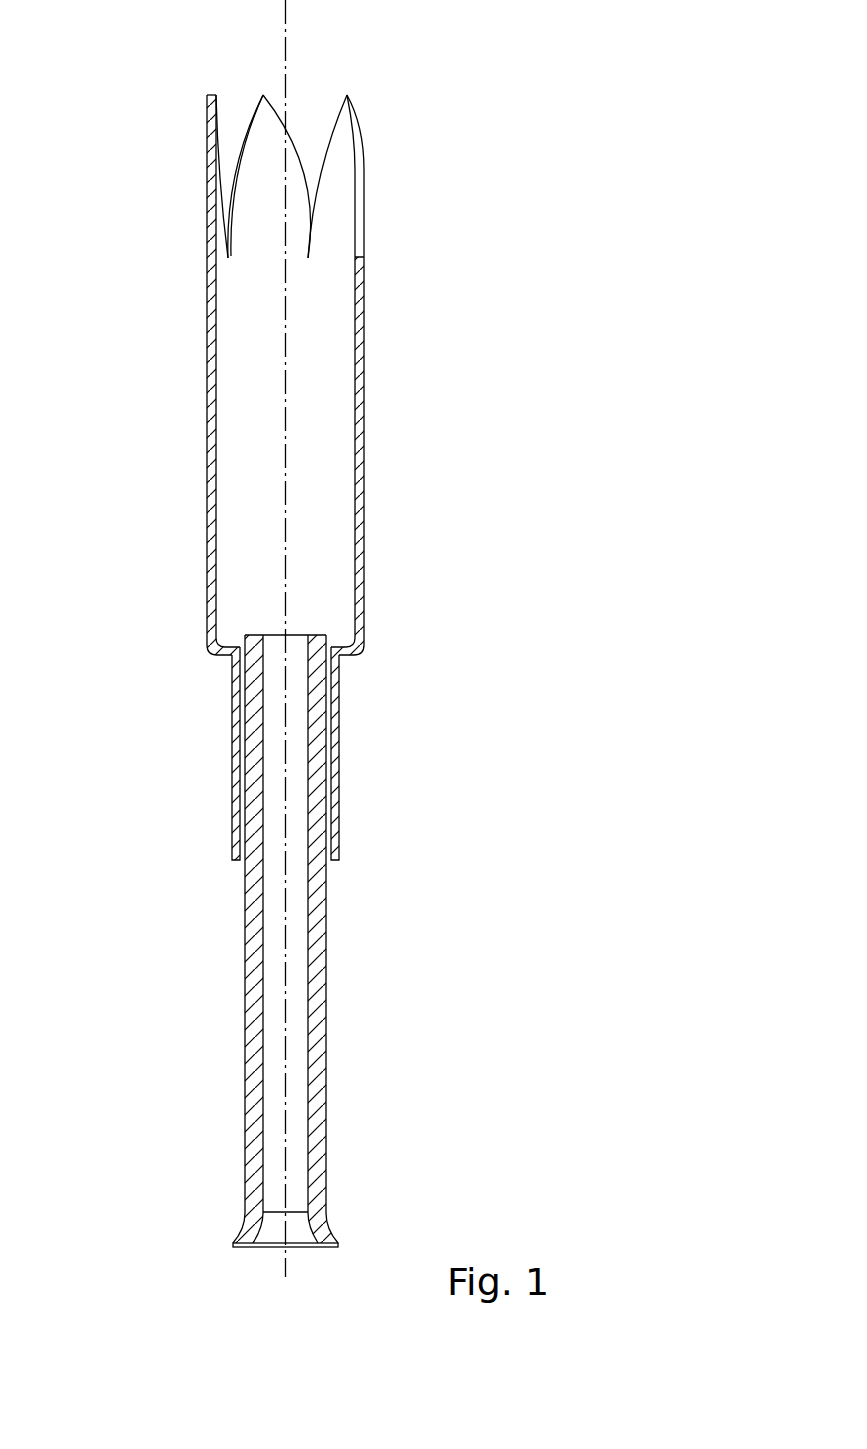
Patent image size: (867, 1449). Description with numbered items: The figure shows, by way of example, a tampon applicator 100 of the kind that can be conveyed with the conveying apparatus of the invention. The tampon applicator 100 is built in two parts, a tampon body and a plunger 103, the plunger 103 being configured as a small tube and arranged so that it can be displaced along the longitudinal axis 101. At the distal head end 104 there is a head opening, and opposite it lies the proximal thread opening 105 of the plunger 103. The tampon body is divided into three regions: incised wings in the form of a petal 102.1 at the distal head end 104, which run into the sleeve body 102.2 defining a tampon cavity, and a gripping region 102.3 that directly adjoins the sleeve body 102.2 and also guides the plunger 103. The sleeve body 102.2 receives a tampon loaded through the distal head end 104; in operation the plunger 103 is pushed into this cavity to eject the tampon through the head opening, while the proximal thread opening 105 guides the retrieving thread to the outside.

The tampon applicator 100 is at (518, 45).
The longitudinal axis 101 is at (285, 48).
The petal 102.1 is at (340, 193).
The sleeve body 102.2 is at (364, 322).
The gripping region 102.3 is at (233, 758).
The plunger 103 is at (255, 1003).
The distal head end 104 is at (306, 118).
The proximal thread opening 105 is at (268, 1270).